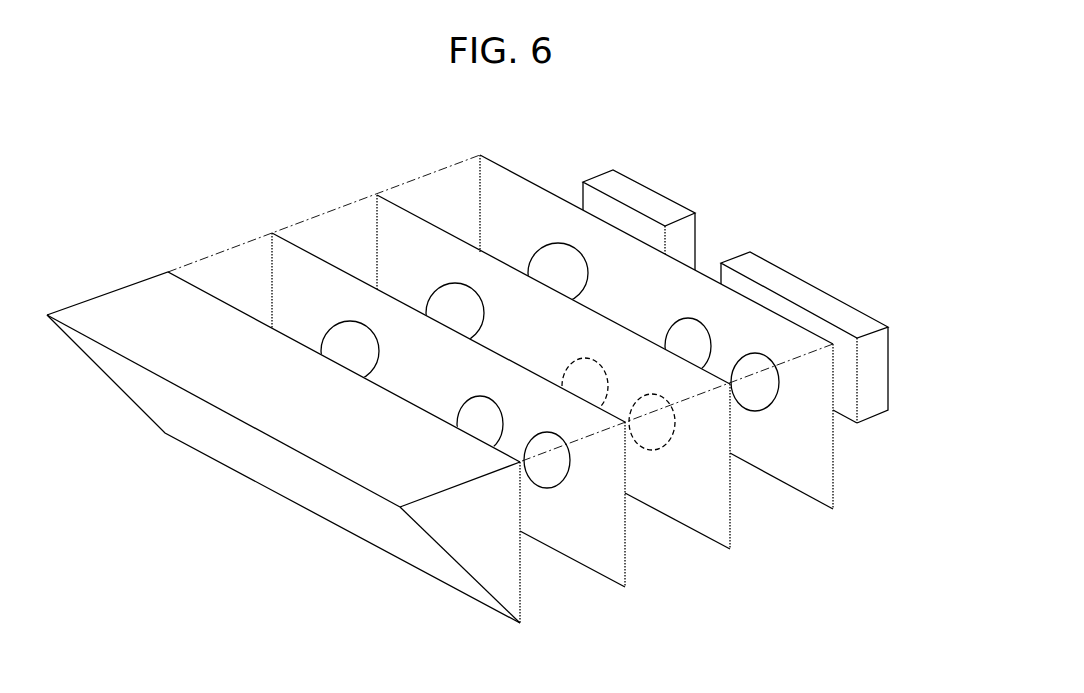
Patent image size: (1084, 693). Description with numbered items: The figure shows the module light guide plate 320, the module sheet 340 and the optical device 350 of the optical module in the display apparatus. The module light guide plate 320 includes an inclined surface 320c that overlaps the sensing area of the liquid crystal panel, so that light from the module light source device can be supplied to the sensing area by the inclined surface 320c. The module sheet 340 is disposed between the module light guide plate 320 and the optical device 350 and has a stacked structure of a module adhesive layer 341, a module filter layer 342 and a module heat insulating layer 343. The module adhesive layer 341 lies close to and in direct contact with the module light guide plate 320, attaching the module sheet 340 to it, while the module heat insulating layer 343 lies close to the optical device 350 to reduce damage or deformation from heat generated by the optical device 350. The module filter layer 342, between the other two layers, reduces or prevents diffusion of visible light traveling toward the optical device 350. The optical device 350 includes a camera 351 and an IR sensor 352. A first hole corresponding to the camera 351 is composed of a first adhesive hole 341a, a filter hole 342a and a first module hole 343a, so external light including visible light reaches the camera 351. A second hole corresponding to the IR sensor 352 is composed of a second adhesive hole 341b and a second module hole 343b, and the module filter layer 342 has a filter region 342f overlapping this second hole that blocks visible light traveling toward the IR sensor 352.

The module light guide plate 320 is at (108, 280).
The inclined surface 320c is at (455, 558).
The module sheet 340 is at (612, 374).
The module adhesive layer 341 is at (499, 412).
The first adhesive hole 341a is at (330, 318).
The second adhesive hole 341b is at (558, 497).
The module filter layer 342 is at (652, 364).
The filter hole 342a is at (433, 278).
The filter region 342f is at (667, 428).
The module heat insulating layer 343 is at (716, 326).
The first module hole 343a is at (536, 238).
The second module hole 343b is at (782, 382).
The optical device 350 is at (735, 282).
The camera 351 is at (663, 205).
The IR sensor 352 is at (804, 314).